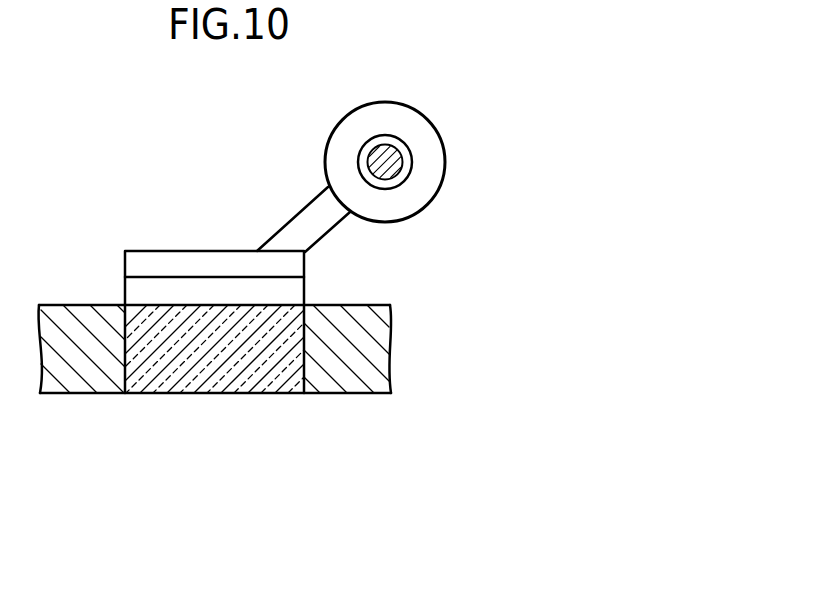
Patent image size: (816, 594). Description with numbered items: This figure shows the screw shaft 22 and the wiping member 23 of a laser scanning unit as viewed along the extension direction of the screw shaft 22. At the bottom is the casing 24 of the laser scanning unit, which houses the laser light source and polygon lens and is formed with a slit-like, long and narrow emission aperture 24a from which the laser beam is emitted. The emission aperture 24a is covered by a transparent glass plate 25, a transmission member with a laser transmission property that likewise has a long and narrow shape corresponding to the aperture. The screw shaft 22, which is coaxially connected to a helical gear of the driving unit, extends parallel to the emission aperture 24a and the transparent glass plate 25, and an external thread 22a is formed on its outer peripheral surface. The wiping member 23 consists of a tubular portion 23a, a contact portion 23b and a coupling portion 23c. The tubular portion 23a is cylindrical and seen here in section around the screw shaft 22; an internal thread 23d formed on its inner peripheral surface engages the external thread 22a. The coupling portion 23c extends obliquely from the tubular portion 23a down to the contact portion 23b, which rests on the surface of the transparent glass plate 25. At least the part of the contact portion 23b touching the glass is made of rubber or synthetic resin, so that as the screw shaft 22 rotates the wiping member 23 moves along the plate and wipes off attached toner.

The screw shaft 22 is at (392, 166).
The external thread 22a is at (407, 148).
The wiping member 23 is at (388, 78).
The tubular portion 23a is at (402, 112).
The contact portion 23b is at (147, 288).
The coupling portion 23c is at (293, 232).
The internal thread 23d is at (365, 160).
The casing 24 is at (377, 350).
The emission aperture 24a is at (302, 368).
The transparent glass plate 25 is at (220, 368).